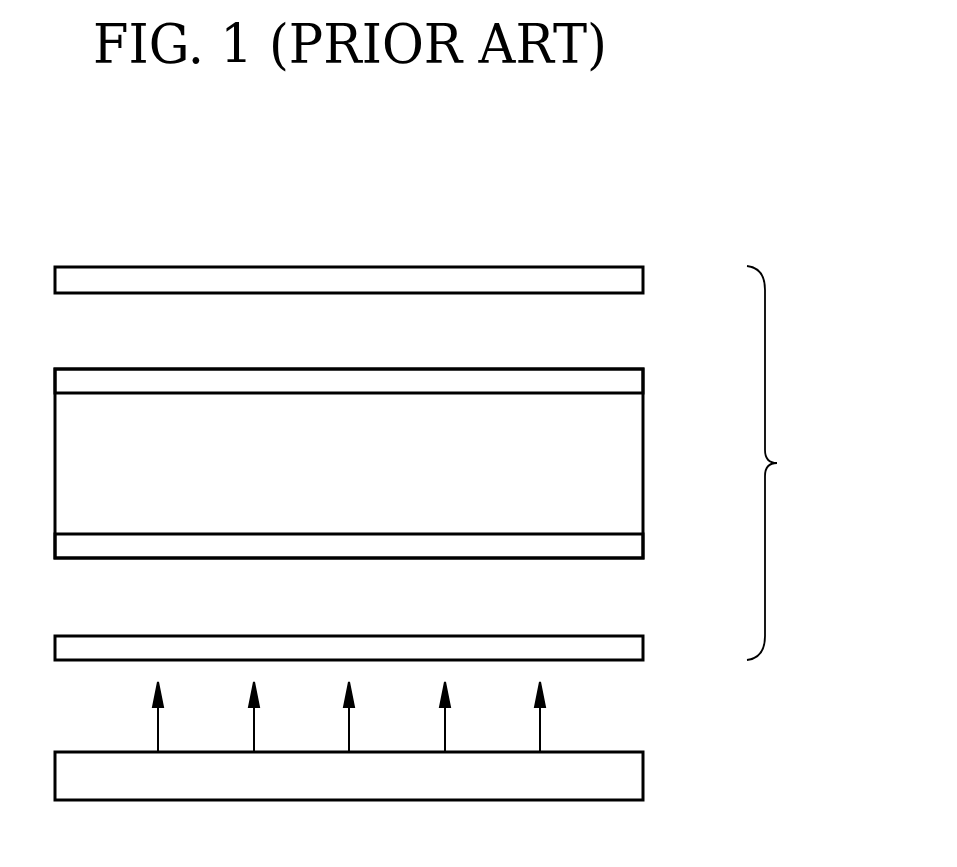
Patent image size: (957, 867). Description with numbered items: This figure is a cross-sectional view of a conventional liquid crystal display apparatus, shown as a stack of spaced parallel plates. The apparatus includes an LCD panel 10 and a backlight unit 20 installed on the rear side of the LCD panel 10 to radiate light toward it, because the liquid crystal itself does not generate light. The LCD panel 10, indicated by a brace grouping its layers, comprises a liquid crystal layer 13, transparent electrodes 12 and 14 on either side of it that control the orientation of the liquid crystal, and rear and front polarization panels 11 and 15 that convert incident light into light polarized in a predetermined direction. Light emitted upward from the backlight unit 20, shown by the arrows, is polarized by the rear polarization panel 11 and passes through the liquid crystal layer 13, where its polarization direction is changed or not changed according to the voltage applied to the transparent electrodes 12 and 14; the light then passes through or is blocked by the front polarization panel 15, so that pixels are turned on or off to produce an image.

The LCD panel 10 is at (785, 463).
The rear polarization panel 11 is at (643, 647).
The transparent electrode 12 is at (643, 546).
The liquid crystal layer 13 is at (643, 463).
The transparent electrode 14 is at (643, 381).
The front polarization panel 15 is at (643, 280).
The backlight unit 20 is at (643, 773).